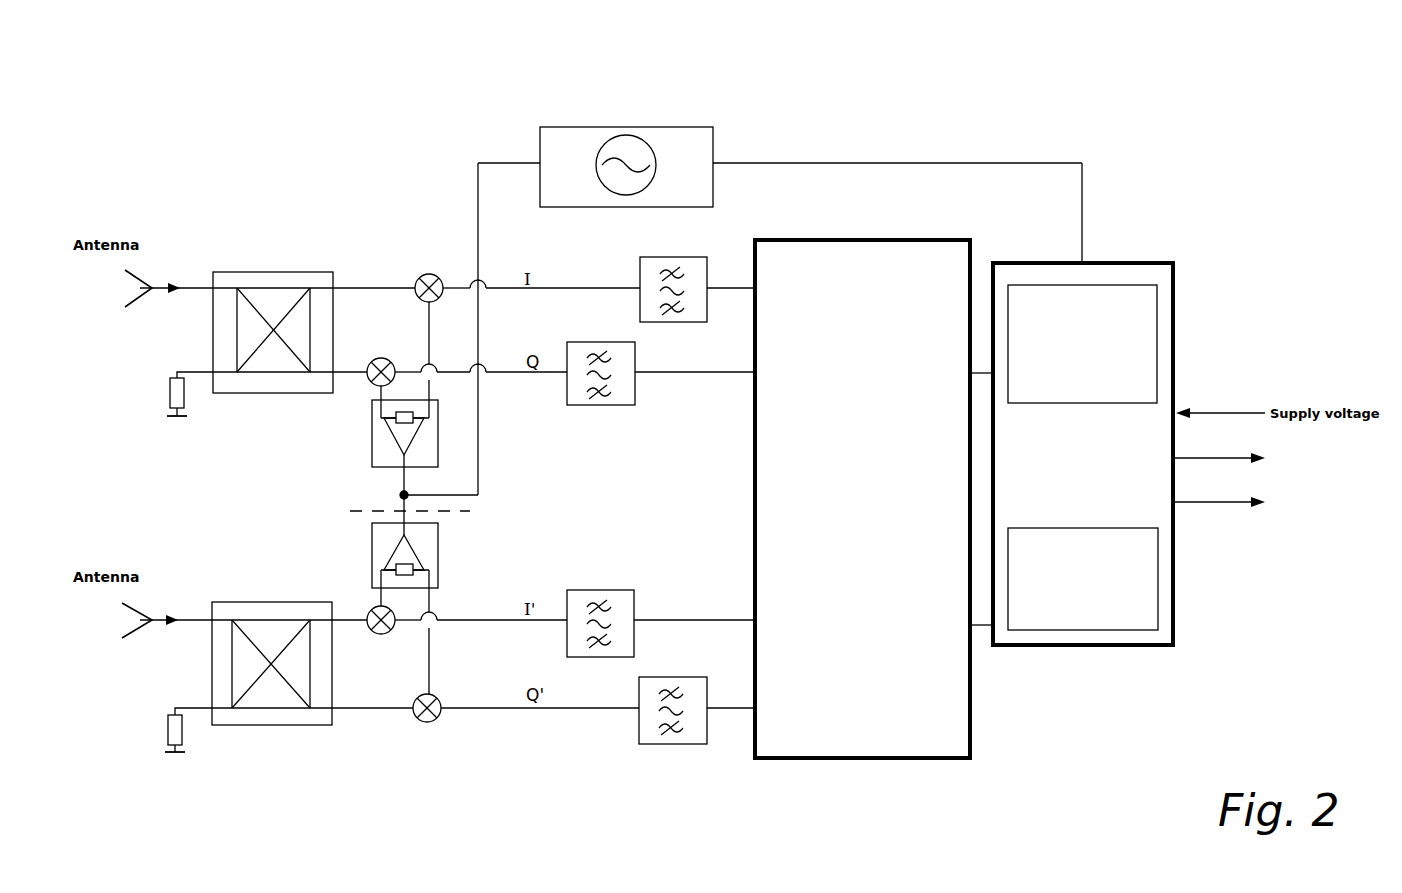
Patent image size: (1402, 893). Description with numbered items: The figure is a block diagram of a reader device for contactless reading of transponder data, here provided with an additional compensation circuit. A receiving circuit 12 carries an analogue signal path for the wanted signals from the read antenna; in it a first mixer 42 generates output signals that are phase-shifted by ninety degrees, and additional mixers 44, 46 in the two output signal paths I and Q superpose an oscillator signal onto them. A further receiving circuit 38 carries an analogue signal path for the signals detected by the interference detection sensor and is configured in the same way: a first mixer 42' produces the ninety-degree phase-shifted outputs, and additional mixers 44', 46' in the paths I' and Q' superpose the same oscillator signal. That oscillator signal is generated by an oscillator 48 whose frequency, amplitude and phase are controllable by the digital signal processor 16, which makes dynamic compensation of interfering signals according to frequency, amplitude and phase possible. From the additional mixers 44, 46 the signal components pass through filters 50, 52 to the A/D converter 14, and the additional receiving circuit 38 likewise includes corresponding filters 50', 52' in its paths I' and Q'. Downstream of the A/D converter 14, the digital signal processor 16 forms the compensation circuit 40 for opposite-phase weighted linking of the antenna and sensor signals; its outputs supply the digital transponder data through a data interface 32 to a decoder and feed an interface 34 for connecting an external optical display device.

The receiving circuit 12 is at (515, 400).
The A/D converter 14 is at (857, 238).
The digital signal processor 16 is at (1112, 475).
The data interface 32 is at (1198, 453).
The interface 34 is at (1200, 504).
The receiving circuit 38 is at (513, 728).
The compensation circuit 40 is at (1140, 618).
The first mixer 42 is at (273, 319).
The first mixer 42' is at (272, 649).
The additional mixer 44 is at (433, 261).
The additional mixer 44' is at (375, 644).
The additional mixer 46 is at (379, 351).
The additional mixer 46' is at (452, 688).
The oscillator 48 is at (703, 121).
The filter 50 is at (680, 309).
The filter 50' is at (626, 610).
The filter 52 is at (626, 392).
The filter 52' is at (673, 744).